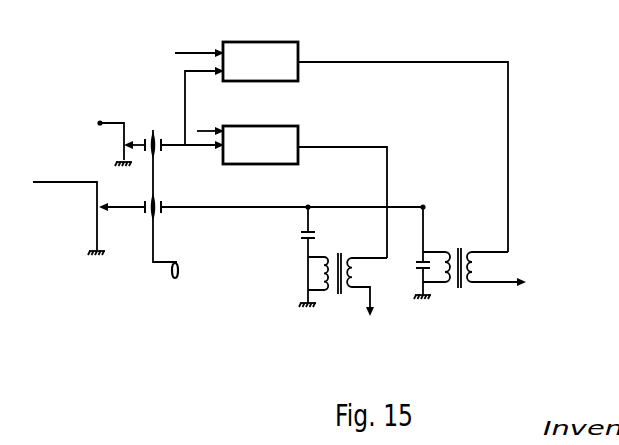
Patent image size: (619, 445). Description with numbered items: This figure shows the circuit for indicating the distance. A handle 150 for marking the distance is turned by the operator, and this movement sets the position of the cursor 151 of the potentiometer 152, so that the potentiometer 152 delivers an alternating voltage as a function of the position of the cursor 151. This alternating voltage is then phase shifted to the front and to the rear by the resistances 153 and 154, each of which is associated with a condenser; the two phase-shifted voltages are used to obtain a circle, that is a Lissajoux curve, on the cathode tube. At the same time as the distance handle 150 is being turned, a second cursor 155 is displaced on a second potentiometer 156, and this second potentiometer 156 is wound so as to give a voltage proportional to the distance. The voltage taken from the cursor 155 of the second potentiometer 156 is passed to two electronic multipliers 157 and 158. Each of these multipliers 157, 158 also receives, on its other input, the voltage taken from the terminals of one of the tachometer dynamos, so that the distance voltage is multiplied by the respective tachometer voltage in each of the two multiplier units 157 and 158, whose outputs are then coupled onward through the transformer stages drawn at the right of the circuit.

The handle 150 is at (186, 267).
The cursor 151 is at (120, 218).
The potentiometer 152 is at (87, 222).
The resistance 153 is at (300, 296).
The resistance 154 is at (433, 225).
The cursor 155 is at (138, 134).
The second potentiometer 156 is at (112, 153).
The electronic multiplier 157 is at (270, 48).
The electronic multiplier 158 is at (290, 136).